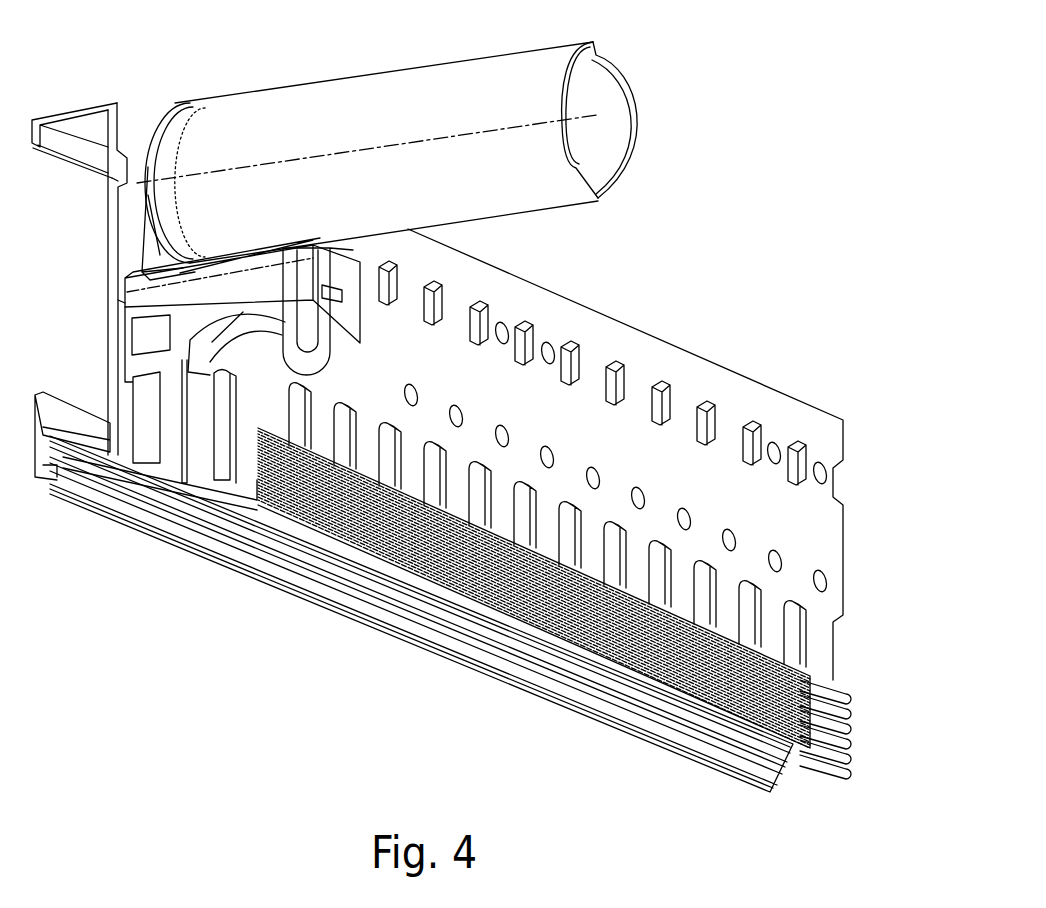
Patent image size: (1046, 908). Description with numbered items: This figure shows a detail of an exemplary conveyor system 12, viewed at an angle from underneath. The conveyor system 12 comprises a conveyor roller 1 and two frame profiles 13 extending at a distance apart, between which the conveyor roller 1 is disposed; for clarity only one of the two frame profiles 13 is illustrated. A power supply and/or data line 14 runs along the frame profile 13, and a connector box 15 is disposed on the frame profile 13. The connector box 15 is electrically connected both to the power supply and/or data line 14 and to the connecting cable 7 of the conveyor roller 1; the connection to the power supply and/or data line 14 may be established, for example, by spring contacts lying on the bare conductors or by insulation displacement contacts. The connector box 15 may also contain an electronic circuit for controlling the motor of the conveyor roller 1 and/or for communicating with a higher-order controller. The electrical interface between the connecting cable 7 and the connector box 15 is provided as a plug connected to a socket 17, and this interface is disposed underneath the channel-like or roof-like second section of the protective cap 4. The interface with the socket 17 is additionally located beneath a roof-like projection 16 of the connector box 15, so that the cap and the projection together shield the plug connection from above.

The conveyor roller 1 is at (607, 93).
The protective cap 4 is at (155, 248).
The connecting cable 7 is at (332, 343).
The conveyor system 12 is at (793, 173).
The frame profile 13 is at (685, 360).
The power supply and/or data line 14 is at (663, 658).
The connector box 15 is at (143, 305).
The roof-like projection 16 is at (260, 280).
The socket 17 is at (287, 323).